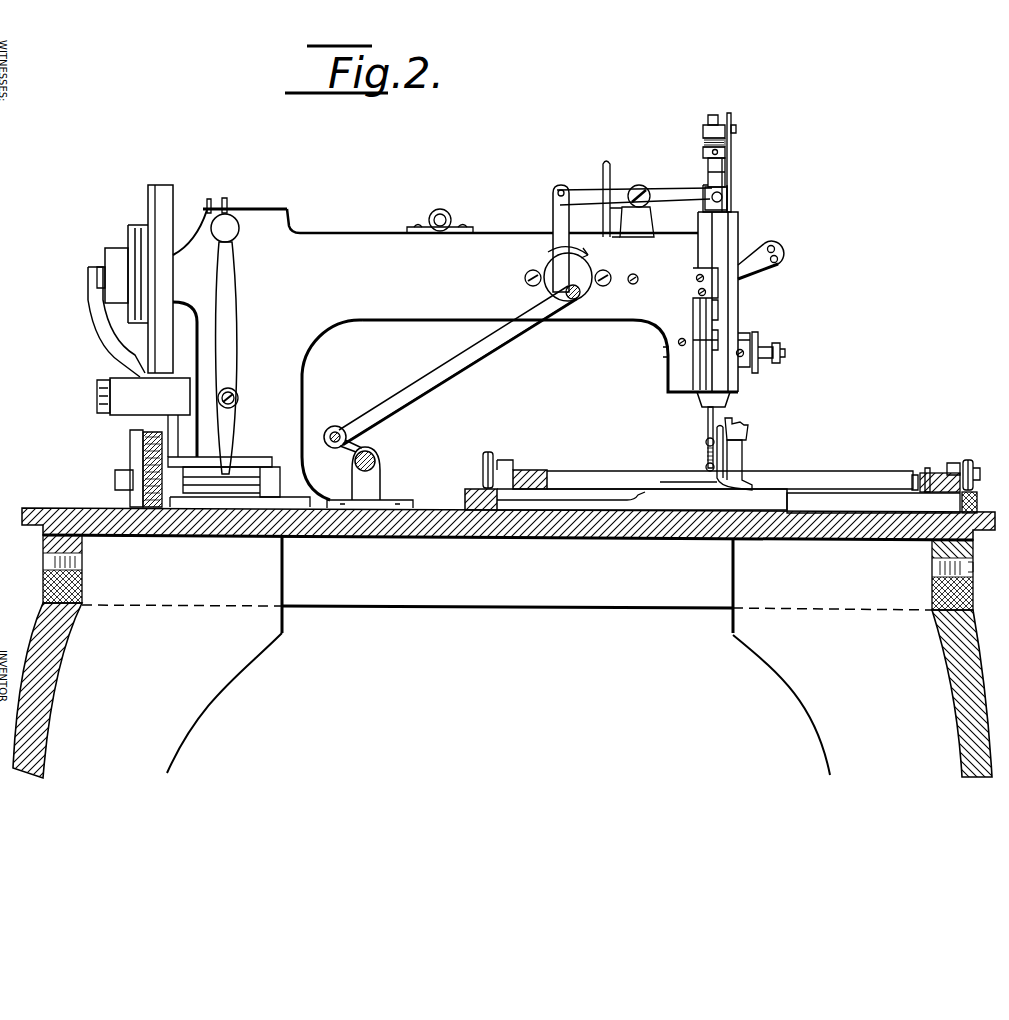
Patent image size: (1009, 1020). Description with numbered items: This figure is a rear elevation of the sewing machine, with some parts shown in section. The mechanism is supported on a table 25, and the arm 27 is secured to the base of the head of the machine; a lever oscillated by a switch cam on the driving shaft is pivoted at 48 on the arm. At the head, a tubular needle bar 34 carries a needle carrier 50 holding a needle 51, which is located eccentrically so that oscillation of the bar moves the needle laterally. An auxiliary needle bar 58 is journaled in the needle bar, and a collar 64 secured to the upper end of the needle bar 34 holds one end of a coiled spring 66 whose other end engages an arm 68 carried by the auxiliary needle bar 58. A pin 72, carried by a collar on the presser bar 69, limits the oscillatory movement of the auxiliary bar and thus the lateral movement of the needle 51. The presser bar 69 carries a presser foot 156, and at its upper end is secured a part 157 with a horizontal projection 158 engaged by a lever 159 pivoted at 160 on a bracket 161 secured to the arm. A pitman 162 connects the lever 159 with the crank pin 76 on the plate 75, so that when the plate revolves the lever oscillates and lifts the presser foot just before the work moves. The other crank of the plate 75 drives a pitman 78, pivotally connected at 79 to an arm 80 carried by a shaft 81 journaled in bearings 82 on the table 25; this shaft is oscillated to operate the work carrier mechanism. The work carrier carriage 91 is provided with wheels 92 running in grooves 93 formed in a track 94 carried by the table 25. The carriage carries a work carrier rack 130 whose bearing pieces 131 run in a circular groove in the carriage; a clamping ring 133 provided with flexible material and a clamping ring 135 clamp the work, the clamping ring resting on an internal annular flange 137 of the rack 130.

The table 25 is at (80, 509).
The arm 27 is at (455, 354).
The pivot 48 is at (440, 217).
The pitman 162 is at (557, 214).
The plate 75 is at (553, 270).
The crank 76 is at (559, 292).
The pitman 78 is at (480, 350).
The pivot 79 is at (332, 431).
The arm 80 is at (348, 453).
The shaft 81 is at (378, 468).
The bearings 82 is at (360, 507).
The wheels 92 is at (482, 462).
The work carrier carriage 91 is at (513, 468).
The track 94 is at (465, 511).
The internal annular flange 137 is at (798, 489).
The clamping ring 135 is at (910, 481).
The work carrier rack 130 is at (926, 488).
The clamping ring 133 is at (918, 475).
The bearing pieces 131 is at (938, 473).
The grooves 93 is at (978, 500).
The needle carrier 50 is at (727, 423).
The needle 51 is at (741, 457).
The presser bar 69 is at (732, 180).
The presser foot 156 is at (707, 470).
The pin 72 is at (732, 114).
The auxiliary needle bar 58 is at (711, 114).
The arm 68 is at (737, 130).
The collar 64 is at (710, 151).
The coiled spring 66 is at (727, 142).
The needle bar 34 is at (727, 167).
The horizontal projection 158 is at (710, 183).
The part 157 is at (732, 197).
The pivot 160 is at (632, 193).
The lever 159 is at (661, 221).
The bracket 161 is at (633, 226).